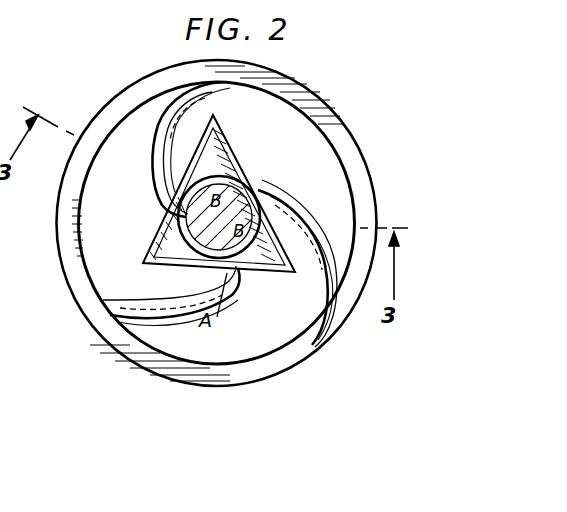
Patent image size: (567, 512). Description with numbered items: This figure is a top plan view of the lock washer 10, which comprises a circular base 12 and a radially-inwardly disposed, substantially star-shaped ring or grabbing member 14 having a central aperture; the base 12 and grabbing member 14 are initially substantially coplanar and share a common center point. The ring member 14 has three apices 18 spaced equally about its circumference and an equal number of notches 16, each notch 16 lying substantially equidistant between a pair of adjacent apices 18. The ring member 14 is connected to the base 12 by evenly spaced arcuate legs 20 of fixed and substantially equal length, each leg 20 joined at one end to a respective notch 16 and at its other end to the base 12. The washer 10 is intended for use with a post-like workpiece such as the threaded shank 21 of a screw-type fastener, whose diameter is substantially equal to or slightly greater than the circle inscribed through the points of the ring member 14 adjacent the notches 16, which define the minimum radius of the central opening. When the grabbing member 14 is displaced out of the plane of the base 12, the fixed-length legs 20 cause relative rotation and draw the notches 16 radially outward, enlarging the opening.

The lock washer 10 is at (364, 132).
The circular base 12 is at (66, 222).
The grabbing member 14 is at (238, 146).
The notches 16 is at (257, 193).
The apices 18 is at (210, 85).
The arcuate legs 20 is at (160, 133).
The threaded shank 21 is at (190, 233).